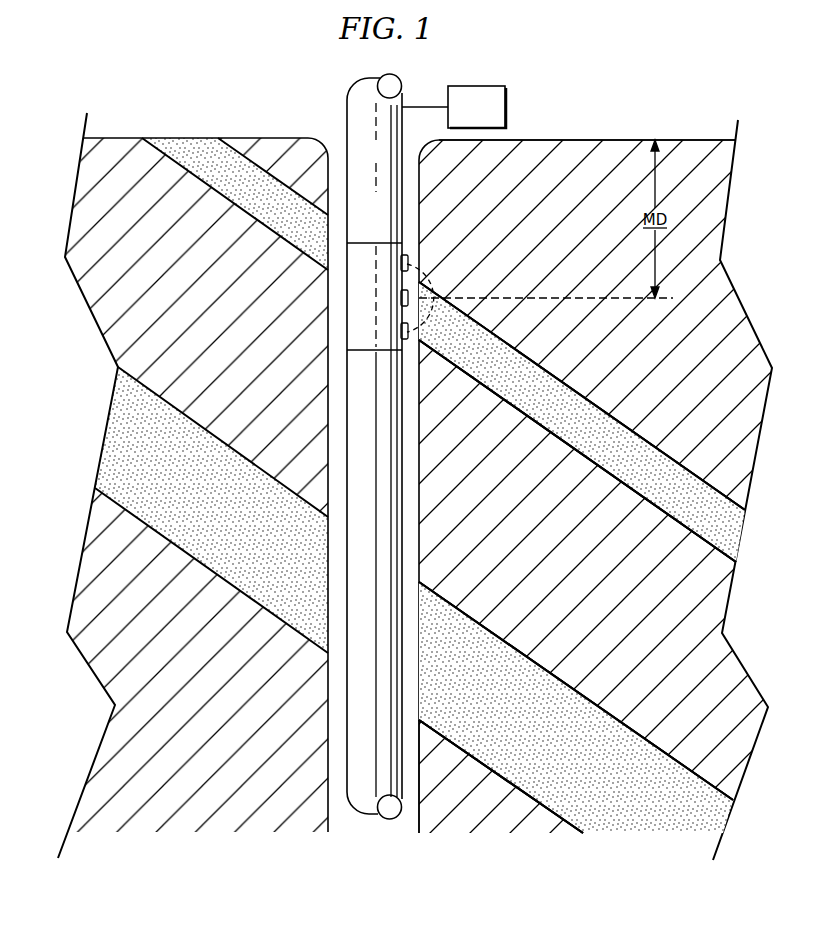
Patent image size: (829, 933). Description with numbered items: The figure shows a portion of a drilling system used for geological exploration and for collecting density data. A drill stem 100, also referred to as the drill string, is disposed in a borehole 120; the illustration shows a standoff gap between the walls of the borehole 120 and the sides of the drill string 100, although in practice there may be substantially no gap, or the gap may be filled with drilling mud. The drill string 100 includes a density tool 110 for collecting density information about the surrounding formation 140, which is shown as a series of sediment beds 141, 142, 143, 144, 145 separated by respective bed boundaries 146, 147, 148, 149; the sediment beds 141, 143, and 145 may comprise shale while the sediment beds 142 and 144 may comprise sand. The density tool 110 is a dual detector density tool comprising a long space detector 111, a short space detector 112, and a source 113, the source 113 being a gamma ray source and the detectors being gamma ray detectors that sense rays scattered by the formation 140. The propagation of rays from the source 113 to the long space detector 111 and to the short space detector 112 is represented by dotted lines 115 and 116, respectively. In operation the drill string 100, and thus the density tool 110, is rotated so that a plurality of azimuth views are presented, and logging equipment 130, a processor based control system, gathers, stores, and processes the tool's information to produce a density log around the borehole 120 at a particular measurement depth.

The drill stem 100 is at (359, 160).
The density tool 110 is at (372, 240).
The long space detector 111 is at (400, 262).
The short space detector 112 is at (400, 297).
The source 113 is at (400, 332).
The dotted line 115 is at (428, 284).
The dotted line 116 is at (437, 290).
The borehole 120 is at (333, 160).
The logging equipment 130 is at (463, 115).
The formation 140 is at (78, 332).
The sediment bed 141 is at (518, 225).
The sediment bed 142 is at (461, 355).
The sediment bed 143 is at (474, 503).
The sediment bed 144 is at (461, 673).
The sediment bed 145 is at (434, 781).
The bed boundary 146 is at (581, 401).
The bed boundary 147 is at (563, 441).
The bed boundary 148 is at (566, 683).
The bed boundary 149 is at (528, 796).